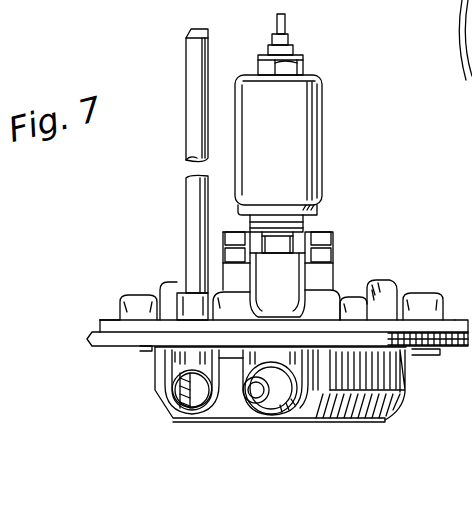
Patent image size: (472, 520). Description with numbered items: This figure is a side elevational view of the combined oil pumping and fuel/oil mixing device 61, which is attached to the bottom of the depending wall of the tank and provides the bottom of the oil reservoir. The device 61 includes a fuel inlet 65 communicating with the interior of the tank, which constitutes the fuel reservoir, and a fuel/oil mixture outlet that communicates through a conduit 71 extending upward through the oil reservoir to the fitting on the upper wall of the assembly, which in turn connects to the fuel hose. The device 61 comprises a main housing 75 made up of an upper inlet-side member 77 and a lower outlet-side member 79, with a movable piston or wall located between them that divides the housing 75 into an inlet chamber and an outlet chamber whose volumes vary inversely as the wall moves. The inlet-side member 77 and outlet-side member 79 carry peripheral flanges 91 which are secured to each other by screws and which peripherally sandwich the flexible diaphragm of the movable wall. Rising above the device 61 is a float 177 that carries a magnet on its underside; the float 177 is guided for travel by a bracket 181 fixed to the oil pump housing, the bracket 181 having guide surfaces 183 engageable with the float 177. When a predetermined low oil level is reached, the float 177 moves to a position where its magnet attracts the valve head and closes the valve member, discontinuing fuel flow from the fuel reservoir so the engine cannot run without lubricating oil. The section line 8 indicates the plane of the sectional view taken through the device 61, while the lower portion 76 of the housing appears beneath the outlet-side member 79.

The section line 8- 8 is at (197, 246).
The combined oil pumping and fuel/oil mixing device 61 is at (145, 386).
The fuel inlet 65 is at (283, 408).
The conduit 71 is at (191, 52).
The main housing 75 is at (405, 396).
The housing lower portion 76 is at (333, 423).
The upper inlet-side member 77 is at (381, 280).
The lower outlet-side member 79 is at (93, 338).
The peripheral flanges 91 is at (453, 328).
The float 177 is at (270, 111).
The bracket 181 is at (301, 66).
The guide surfaces 183 is at (287, 50).